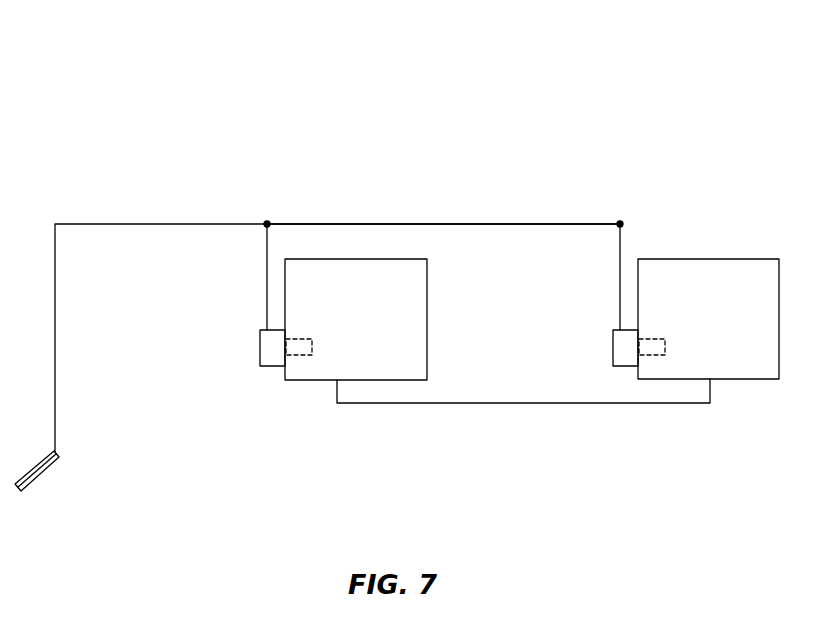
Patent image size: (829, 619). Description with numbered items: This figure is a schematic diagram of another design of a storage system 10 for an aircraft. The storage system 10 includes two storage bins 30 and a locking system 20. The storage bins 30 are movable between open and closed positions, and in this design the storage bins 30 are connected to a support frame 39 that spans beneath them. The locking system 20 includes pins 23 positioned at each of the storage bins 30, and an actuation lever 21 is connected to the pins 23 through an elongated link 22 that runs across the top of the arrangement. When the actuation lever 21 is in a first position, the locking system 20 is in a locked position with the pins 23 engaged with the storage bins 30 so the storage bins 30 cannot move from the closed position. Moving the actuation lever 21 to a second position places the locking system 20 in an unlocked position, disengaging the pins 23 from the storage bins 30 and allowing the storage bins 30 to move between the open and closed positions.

The storage system 10 is at (181, 146).
The locking system 20 is at (555, 217).
The actuation lever 21 is at (33, 482).
The elongated link 22 is at (370, 223).
The pin 23 is at (272, 367).
The storage bin 30 is at (366, 325).
The support frame 39 is at (550, 392).